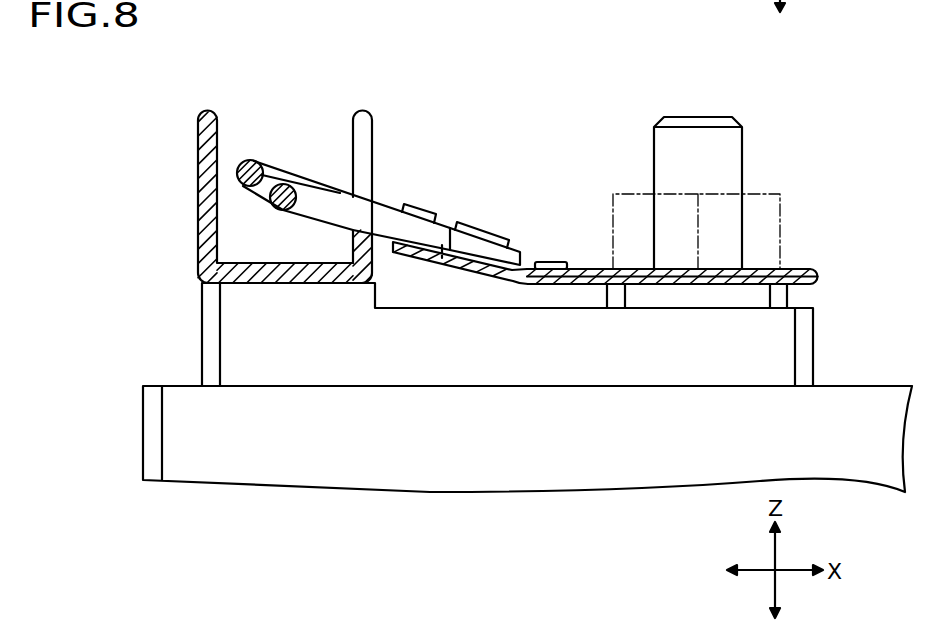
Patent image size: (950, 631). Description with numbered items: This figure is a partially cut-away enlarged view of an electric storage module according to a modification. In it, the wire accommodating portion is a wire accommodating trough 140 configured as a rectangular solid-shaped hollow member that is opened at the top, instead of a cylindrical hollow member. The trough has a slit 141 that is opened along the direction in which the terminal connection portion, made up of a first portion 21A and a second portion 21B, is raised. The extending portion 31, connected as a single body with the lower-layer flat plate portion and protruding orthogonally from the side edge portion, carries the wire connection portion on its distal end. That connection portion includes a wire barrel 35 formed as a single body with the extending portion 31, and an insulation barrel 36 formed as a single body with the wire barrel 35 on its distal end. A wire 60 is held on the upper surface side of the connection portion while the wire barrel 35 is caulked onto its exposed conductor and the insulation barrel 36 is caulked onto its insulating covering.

The wire accommodating trough 140 is at (195, 139).
The slit 141 is at (370, 158).
The wire 60 is at (257, 160).
The insulation barrel 36 is at (417, 211).
The wire barrel 35 is at (490, 238).
The extending portion 31 is at (530, 268).
The second portion 21B is at (797, 270).
The first portion 21A is at (803, 285).